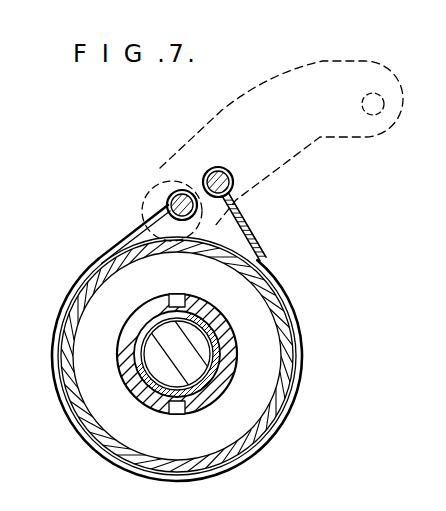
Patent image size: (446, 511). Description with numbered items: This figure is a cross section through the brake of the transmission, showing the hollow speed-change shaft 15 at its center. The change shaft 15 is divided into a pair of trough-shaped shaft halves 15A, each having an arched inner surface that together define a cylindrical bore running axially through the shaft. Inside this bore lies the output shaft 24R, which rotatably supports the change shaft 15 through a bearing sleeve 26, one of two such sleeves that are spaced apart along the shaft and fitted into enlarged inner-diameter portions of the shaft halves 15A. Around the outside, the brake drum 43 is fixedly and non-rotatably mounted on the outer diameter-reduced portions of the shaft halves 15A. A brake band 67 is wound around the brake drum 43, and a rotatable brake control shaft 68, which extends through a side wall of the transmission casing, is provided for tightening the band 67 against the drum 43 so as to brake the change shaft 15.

The speed-change shaft 15 is at (210, 415).
The shaft half 15A is at (226, 338).
The output shaft 24R is at (186, 363).
The bearing sleeve 26 is at (144, 322).
The brake drum 43 is at (99, 257).
The brake band 67 is at (257, 257).
The brake control shaft 68 is at (168, 193).